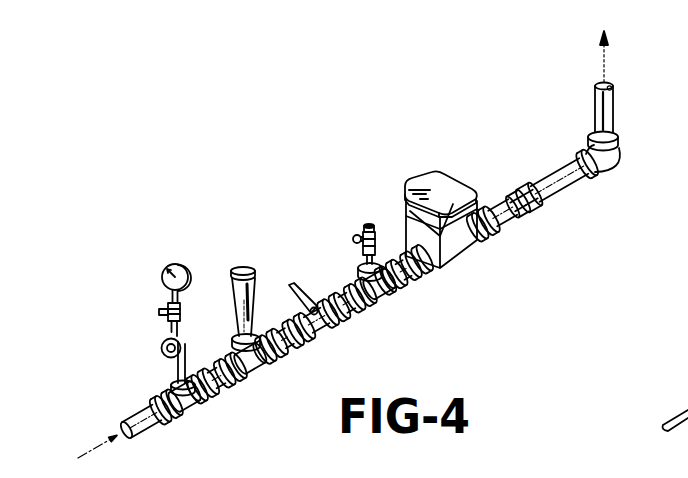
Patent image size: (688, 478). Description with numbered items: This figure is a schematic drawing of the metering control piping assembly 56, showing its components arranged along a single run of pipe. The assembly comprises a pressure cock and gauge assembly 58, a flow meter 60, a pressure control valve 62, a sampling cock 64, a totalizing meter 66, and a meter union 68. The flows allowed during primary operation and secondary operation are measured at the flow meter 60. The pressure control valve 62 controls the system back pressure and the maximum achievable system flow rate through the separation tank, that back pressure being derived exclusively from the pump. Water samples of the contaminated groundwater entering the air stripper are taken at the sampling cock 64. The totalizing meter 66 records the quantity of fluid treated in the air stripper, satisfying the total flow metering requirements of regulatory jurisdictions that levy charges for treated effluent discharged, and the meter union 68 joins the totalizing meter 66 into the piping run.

The metering control piping assembly 56 is at (359, 330).
The pressure cock and gauge assembly 58 is at (163, 350).
The flow meter 60 is at (246, 268).
The pressure control valve 62 is at (318, 300).
The sampling cock 64 is at (369, 224).
The totalizing meter 66 is at (432, 176).
The meter union 68 is at (525, 183).